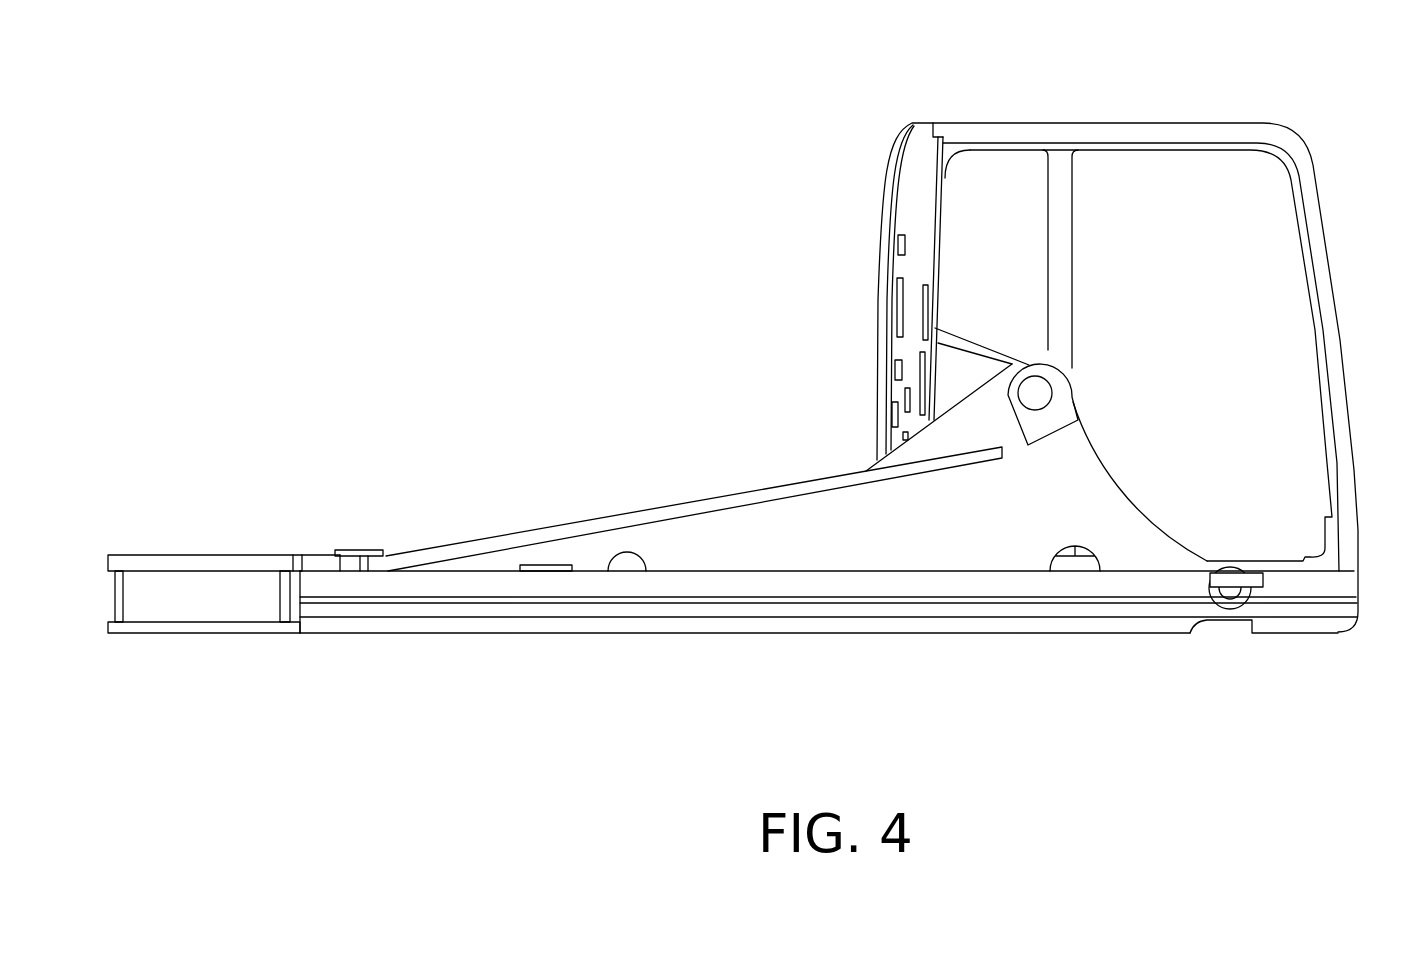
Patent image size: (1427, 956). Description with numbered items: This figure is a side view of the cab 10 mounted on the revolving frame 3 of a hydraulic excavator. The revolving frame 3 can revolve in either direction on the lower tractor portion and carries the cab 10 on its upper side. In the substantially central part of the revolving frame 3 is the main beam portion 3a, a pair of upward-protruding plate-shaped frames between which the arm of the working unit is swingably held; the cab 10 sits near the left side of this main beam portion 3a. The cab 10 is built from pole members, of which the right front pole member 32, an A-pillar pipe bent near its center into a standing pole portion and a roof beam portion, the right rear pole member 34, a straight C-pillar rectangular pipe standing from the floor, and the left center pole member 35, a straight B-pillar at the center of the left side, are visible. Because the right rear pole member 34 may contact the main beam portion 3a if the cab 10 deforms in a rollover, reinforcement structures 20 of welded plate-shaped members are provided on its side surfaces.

The cab 10 is at (1084, 328).
The reinforcement structures 20 is at (870, 291).
The revolving frame 3 is at (796, 449).
The main beam portion 3a is at (840, 500).
The right front pole member 32 is at (1330, 320).
The right rear pole member 34 is at (900, 181).
The left center pole member 35 is at (1065, 272).